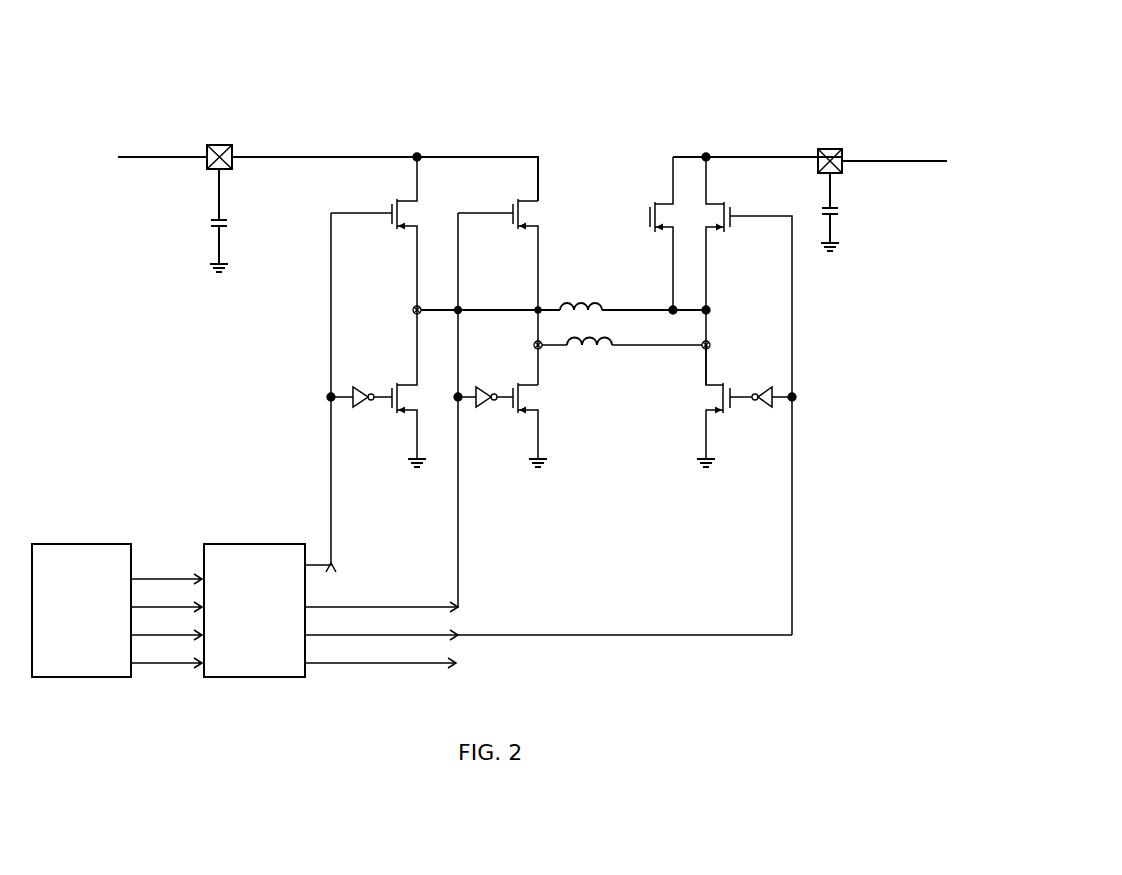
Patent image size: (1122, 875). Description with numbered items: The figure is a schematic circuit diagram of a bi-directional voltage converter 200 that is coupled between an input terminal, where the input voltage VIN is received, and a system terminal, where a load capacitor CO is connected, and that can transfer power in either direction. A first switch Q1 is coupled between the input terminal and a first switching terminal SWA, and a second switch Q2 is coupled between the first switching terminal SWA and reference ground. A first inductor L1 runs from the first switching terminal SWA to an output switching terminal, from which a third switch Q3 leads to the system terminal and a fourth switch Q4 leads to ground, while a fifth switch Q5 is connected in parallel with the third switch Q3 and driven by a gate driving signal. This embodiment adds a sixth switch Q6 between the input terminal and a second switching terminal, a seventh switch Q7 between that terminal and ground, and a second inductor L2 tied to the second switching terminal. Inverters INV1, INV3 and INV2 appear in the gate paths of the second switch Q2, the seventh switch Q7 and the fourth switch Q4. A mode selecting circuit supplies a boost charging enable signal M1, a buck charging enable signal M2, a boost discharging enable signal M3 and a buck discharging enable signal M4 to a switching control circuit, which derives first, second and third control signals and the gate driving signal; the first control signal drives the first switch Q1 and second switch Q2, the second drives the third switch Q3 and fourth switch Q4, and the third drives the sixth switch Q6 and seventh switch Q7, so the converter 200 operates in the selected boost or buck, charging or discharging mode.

The bi-directional voltage converter 200 is at (890, 58).
The first switch Q1 is at (388, 233).
The second switch Q2 is at (418, 388).
The third switch Q3 is at (749, 396).
The fourth switch Q4 is at (706, 406).
The fifth switch Q5 is at (638, 211).
The sixth switch Q6 is at (512, 292).
The seventh switch Q7 is at (540, 425).
The first inductor L1 is at (633, 297).
The second inductor L2 is at (620, 351).
The inverter INV1 is at (361, 409).
The inverter INV2 is at (761, 413).
The inverter INV3 is at (485, 411).
The load capacitor CO is at (873, 192).
The input voltage VIN is at (175, 205).
The first switching terminal SWA is at (465, 311).
The boost charging enable signal M1 is at (166, 573).
The buck charging enable signal M2 is at (166, 601).
The boost discharging enable signal M3 is at (166, 629).
The buck discharging enable signal M4 is at (166, 657).